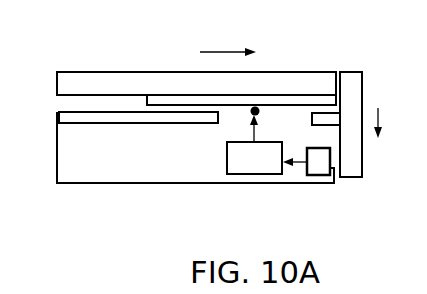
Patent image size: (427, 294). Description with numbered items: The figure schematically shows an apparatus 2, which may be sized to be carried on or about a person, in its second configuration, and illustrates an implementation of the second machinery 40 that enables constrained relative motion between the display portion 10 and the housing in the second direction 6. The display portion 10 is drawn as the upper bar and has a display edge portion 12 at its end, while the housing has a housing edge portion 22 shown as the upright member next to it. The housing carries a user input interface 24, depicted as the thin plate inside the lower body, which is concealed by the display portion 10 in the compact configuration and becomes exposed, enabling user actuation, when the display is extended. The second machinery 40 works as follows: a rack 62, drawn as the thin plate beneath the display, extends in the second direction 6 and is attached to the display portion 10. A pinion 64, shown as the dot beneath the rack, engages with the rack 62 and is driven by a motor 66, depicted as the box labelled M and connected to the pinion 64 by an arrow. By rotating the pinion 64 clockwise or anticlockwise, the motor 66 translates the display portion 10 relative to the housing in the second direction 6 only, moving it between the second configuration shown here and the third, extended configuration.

The apparatus 2 is at (43, 78).
The second direction 6 is at (233, 52).
The display portion 10 is at (175, 71).
The display edge portion 12 is at (352, 72).
The housing edge portion 22 is at (363, 88).
The user input interface 24 is at (100, 117).
The second machinery 40 is at (186, 137).
The rack 62 is at (297, 104).
The pinion 64 is at (257, 110).
The motor 66 is at (227, 151).